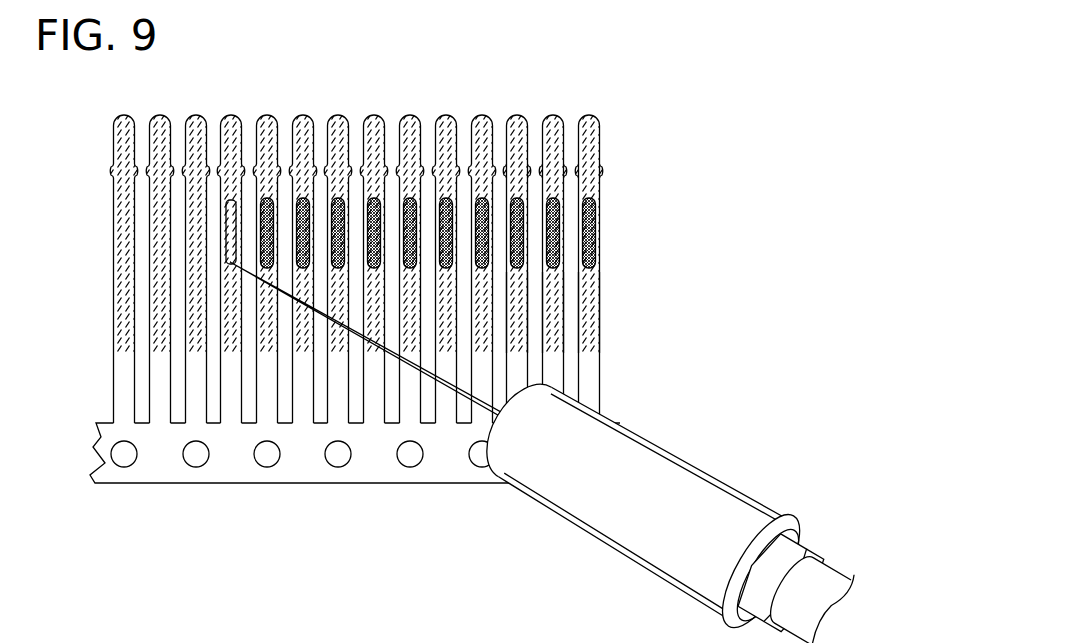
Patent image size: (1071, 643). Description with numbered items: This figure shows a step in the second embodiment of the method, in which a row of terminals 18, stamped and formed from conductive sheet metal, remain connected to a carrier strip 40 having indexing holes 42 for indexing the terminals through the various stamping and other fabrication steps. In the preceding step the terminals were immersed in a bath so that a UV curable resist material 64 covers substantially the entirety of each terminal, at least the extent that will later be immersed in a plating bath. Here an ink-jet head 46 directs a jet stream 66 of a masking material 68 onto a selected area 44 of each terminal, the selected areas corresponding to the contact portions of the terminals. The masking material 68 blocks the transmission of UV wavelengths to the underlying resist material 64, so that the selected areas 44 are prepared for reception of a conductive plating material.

The terminals 18 is at (479, 103).
The selected area 44 is at (577, 173).
The masking material 68 is at (598, 246).
The resist material 64 is at (586, 337).
The carrier strip 40 is at (172, 462).
The indexing holes 42 is at (278, 444).
The jet stream 66 is at (447, 385).
The ink-jet head 46 is at (688, 490).